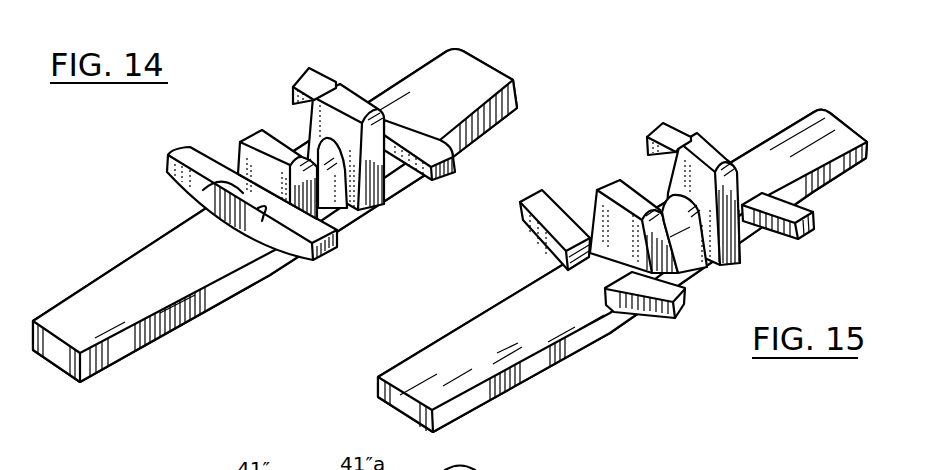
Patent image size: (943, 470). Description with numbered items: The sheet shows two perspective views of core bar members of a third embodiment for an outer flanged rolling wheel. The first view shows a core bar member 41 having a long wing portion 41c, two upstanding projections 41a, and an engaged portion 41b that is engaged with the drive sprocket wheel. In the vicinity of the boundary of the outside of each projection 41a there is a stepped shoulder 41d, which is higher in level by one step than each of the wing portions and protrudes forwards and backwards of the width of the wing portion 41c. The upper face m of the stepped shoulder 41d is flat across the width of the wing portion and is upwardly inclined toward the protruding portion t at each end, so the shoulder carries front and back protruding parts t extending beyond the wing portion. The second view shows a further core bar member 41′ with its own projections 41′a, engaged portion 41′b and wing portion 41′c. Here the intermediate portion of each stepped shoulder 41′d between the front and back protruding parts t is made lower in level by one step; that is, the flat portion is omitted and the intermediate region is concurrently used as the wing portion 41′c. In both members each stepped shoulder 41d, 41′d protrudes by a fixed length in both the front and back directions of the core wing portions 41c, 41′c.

In FIG. 14, the core bar member 41 is at (141, 166).
In FIG. 14, the projection 41a is at (267, 143).
In FIG. 14, the engaged portion 41b is at (337, 190).
In FIG. 14, the wing portion 41c is at (112, 287).
In FIG. 14, the stepped shoulder 41d is at (200, 186).
In FIG. 14, the protruding portion t is at (188, 144).
In FIG. 15, the protruding portion t is at (520, 210).
In FIG. 14, the upper face m is at (255, 230).
In FIG. 15, the core bar member 41′ is at (566, 174).
In FIG. 15, the projection 41′a is at (621, 193).
In FIG. 15, the engaged portion 41′b is at (685, 243).
In FIG. 15, the wing portion 41′c is at (432, 365).
In FIG. 15, the stepped shoulder 41′d is at (553, 252).